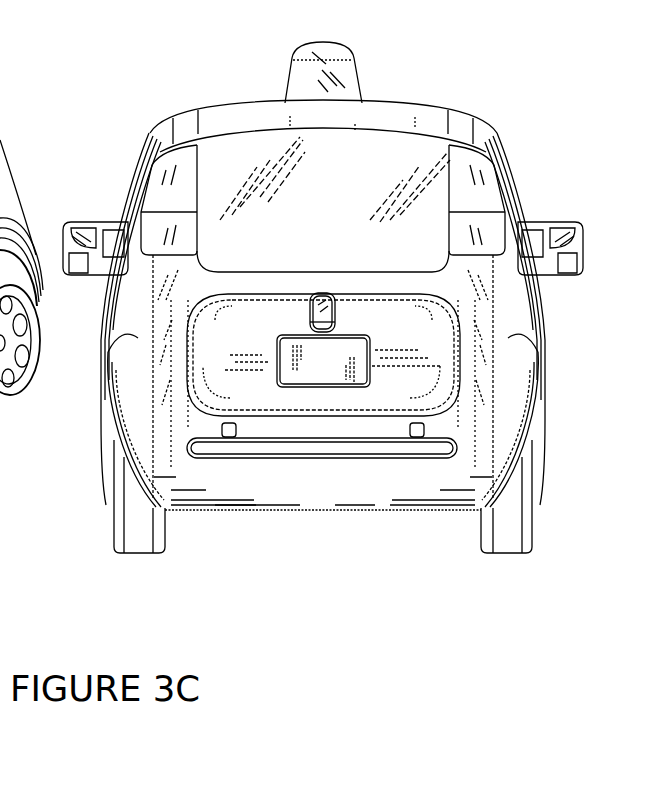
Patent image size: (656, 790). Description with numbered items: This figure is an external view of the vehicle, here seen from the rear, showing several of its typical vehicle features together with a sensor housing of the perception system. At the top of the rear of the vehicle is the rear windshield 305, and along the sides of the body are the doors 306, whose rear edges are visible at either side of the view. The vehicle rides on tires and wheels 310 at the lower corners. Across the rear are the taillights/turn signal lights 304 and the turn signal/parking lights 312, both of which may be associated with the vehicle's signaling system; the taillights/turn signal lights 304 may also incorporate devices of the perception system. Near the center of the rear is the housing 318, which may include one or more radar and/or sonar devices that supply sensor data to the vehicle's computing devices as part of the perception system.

The taillights/turn signal lights 304 is at (483, 183).
The rear windshield 305 is at (464, 214).
The doors 306 is at (540, 302).
The tires and wheels 310 is at (533, 540).
The turn signal/parking lights 312 is at (460, 457).
The housing 318 is at (327, 332).